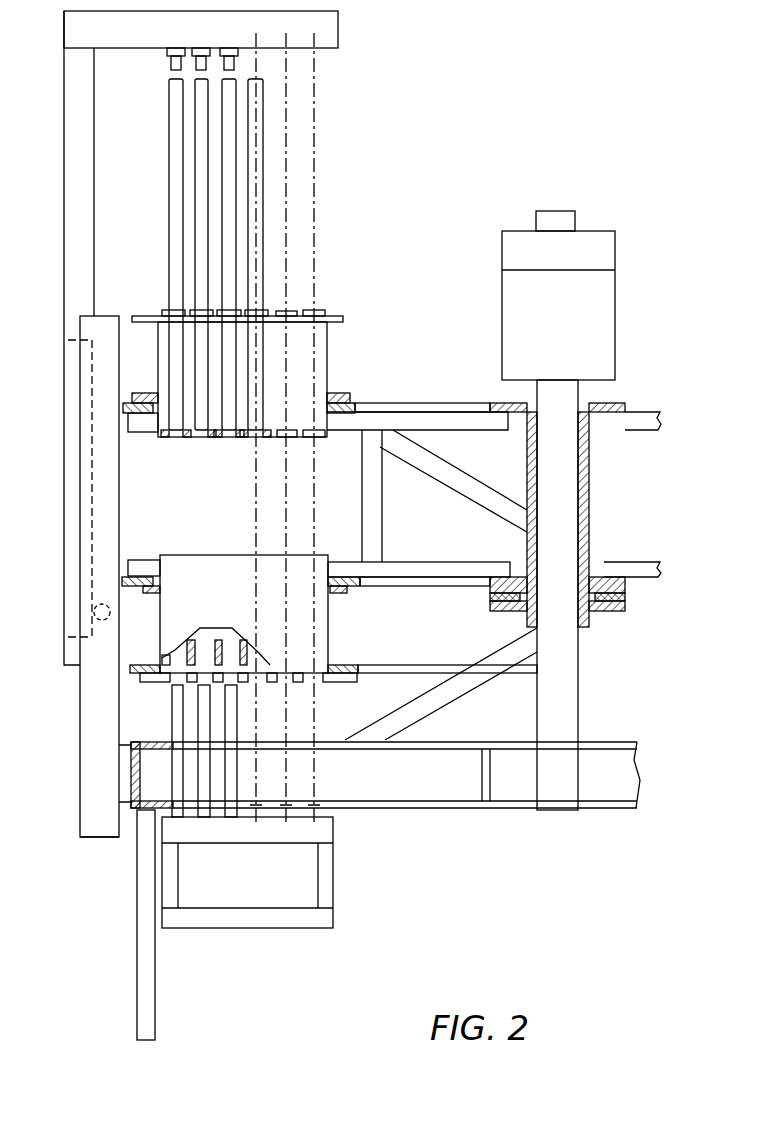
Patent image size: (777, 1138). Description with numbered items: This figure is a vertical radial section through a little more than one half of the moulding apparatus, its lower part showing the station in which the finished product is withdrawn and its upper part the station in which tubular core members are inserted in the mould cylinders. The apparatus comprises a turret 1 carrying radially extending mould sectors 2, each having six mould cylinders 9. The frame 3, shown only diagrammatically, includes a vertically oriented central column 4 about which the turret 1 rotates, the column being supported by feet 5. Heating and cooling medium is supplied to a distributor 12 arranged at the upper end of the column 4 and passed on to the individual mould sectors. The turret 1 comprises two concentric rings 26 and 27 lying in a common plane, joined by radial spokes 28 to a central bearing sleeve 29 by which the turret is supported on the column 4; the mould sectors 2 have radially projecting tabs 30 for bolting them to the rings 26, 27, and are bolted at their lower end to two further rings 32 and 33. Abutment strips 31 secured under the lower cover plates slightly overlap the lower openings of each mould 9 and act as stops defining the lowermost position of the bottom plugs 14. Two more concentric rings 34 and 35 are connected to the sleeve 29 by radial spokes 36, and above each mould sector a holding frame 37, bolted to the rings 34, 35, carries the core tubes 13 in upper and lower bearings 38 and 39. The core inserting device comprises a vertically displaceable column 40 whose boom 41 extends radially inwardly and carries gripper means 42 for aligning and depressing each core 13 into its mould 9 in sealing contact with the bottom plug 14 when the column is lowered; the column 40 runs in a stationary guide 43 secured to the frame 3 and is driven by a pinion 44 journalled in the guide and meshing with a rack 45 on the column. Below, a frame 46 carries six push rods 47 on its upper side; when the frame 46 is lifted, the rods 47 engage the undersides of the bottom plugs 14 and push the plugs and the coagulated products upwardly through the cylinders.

The turret 1 is at (458, 400).
The mould sector 2 is at (293, 555).
The frame 3 is at (496, 818).
The central column 4 is at (570, 688).
The feet 5 is at (145, 963).
The mould cylinder 9 is at (240, 648).
The distributor 12 is at (603, 304).
The core tube 13 is at (202, 160).
The bottom plug 14 is at (168, 655).
The concentric ring 26 is at (362, 590).
The concentric ring 27 is at (143, 577).
The radial spokes 28 is at (447, 570).
The bearing sleeve 29 is at (585, 496).
The radially projecting tabs 30 is at (345, 594).
The abutment strips 31 is at (298, 682).
The ring 32 is at (350, 682).
The ring 33 is at (135, 675).
The concentric ring 34 is at (340, 394).
The concentric ring 35 is at (143, 422).
The radial spokes 36 is at (472, 420).
The holding frame 37 is at (320, 350).
The upper bearing 38 is at (305, 312).
The lower bearing 39 is at (217, 437).
The vertically displaceable column 40 is at (80, 178).
The boom 41 is at (333, 38).
The gripper means 42 is at (168, 62).
The stationary guide 43 is at (100, 797).
The pinion 44 is at (94, 612).
The rack 45 is at (93, 500).
The frame 46 is at (328, 893).
The push rods 47 is at (228, 817).